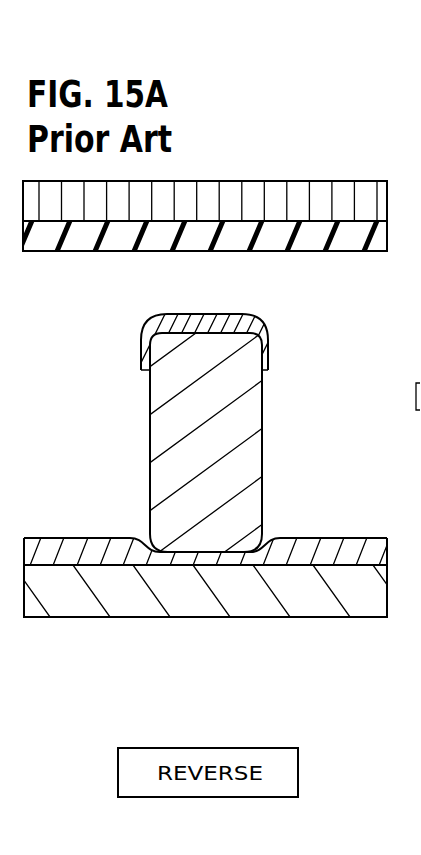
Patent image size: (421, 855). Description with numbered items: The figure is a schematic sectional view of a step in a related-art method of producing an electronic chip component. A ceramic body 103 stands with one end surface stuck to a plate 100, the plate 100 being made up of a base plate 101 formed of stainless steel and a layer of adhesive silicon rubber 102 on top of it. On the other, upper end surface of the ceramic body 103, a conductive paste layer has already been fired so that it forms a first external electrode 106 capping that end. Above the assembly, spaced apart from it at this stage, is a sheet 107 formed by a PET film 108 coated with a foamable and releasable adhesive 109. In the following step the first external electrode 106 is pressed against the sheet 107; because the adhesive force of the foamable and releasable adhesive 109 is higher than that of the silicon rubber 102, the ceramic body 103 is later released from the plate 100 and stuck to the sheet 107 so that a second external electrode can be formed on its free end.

The plate 100 is at (208, 648).
The base plate 101 is at (347, 617).
The adhesive silicon rubber 102 is at (300, 567).
The ceramic body 103 is at (263, 435).
The first external electrode 106 is at (267, 355).
The sheet 107 is at (202, 134).
The PET film 108 is at (273, 180).
The foamable and releasable adhesive 109 is at (235, 221).